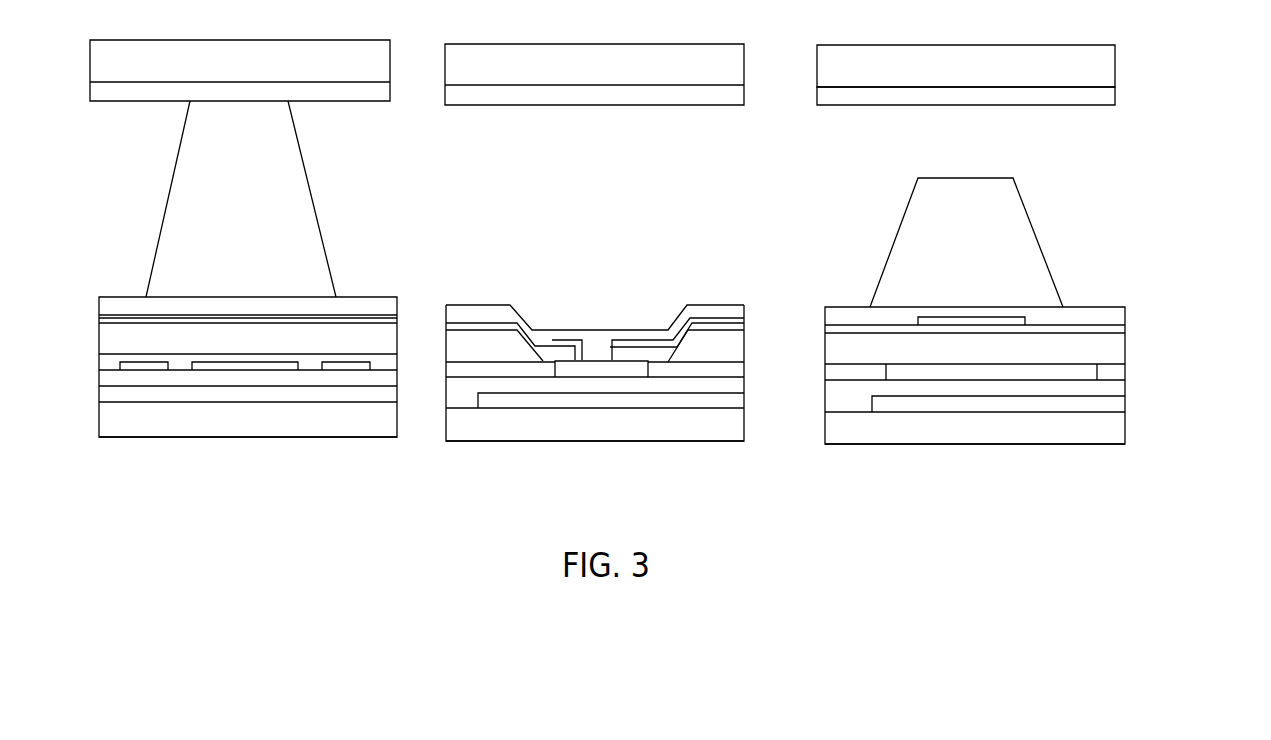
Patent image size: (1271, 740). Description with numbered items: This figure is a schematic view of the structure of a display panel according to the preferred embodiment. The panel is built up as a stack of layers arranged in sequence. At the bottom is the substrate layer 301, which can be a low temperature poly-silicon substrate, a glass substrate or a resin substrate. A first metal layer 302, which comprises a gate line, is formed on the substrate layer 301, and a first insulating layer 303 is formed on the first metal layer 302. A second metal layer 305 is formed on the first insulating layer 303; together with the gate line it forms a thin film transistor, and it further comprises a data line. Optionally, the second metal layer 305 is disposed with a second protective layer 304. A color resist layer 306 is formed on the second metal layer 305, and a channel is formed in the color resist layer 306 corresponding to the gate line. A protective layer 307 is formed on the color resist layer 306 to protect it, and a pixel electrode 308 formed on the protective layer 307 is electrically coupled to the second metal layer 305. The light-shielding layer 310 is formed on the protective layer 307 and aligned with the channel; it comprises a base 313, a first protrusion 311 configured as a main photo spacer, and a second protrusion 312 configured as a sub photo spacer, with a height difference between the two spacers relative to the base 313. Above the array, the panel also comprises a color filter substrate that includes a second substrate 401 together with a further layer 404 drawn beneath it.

The substrate layer 301 is at (112, 415).
The first metal layer 302 is at (110, 392).
The first insulating layer 303 is at (112, 375).
The second protective layer 304 is at (110, 358).
The second metal layer 305 is at (240, 365).
The color resist layer 306 is at (110, 337).
The protective layer 307 is at (110, 323).
The pixel electrode 308 is at (712, 320).
The light-shielding layer 310 is at (113, 305).
The first protrusion 311 is at (310, 215).
The second protrusion 312 is at (1012, 248).
The base 313 is at (357, 302).
The second substrate 401 is at (1093, 62).
The mask film 404 is at (1093, 93).